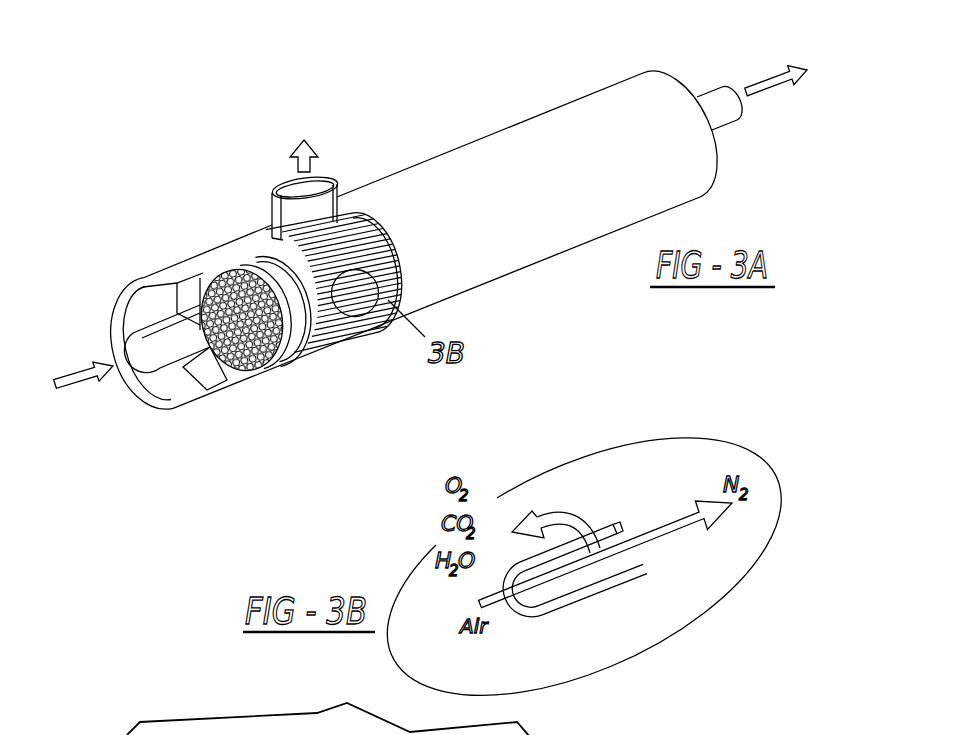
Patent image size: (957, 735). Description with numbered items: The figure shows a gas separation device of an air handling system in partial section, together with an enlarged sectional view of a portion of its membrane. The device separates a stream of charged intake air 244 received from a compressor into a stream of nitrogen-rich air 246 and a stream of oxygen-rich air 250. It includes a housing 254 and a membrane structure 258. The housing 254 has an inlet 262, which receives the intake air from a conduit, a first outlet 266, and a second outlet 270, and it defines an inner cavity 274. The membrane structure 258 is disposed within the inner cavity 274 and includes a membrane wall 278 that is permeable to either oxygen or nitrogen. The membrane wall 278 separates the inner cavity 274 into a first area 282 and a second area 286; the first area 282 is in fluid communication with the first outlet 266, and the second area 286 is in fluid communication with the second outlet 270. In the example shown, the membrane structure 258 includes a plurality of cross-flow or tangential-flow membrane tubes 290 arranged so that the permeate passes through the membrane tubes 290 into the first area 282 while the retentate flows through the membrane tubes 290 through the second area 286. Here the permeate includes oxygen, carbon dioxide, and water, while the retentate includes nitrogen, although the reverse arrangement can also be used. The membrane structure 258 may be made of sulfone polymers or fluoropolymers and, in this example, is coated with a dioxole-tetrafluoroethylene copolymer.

In FIG. 3A, the stream of charged intake air 244 is at (67, 378).
In FIG. 3A, the stream of nitrogen-rich air 246 is at (757, 88).
In FIG. 3A, the stream of oxygen-rich air 250 is at (312, 148).
In FIG. 3A, the housing 254 is at (555, 140).
In FIG. 3A, the membrane structure 258 is at (343, 355).
In FIG. 3A, the inlet 262 is at (178, 363).
In FIG. 3A, the first outlet 266 is at (338, 182).
In FIG. 3A, the second outlet 270 is at (725, 115).
In FIG. 3A, the inner cavity 274 is at (240, 373).
In FIG. 3B, the membrane wall 278 is at (620, 521).
In FIG. 3A, the first area 282 is at (362, 237).
In FIG. 3B, the first area 282 is at (599, 525).
In FIG. 3A, the second area 286 is at (237, 293).
In FIG. 3B, the second area 286 is at (610, 570).
In FIG. 3A, the membrane tubes 290 is at (388, 271).
In FIG. 3B, the membrane tubes 290 is at (563, 612).